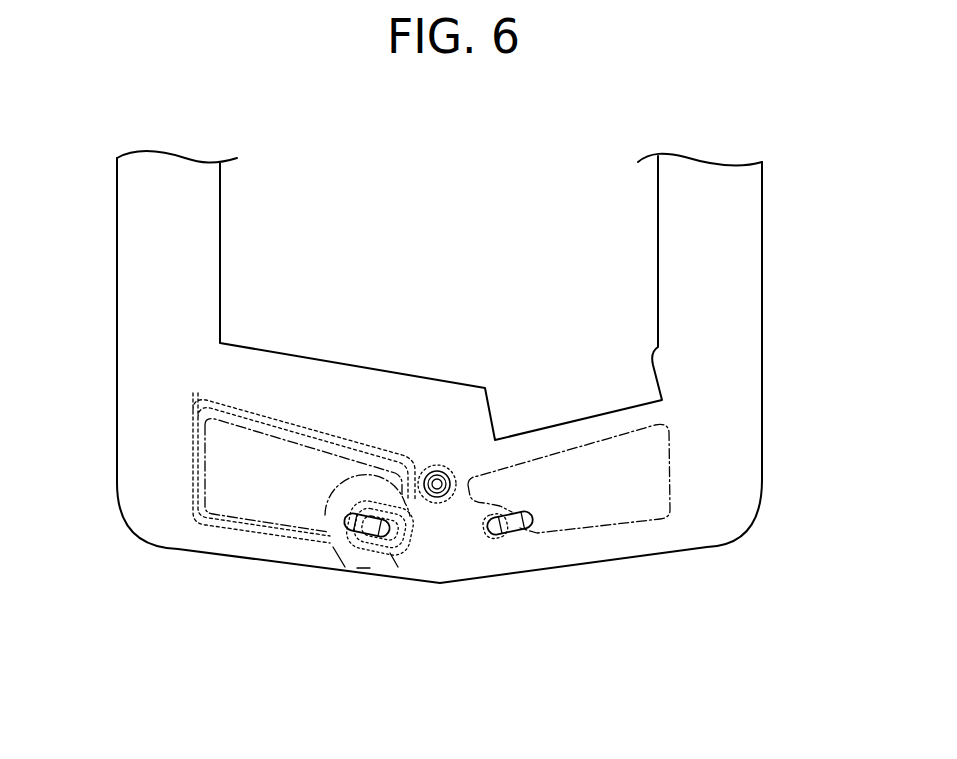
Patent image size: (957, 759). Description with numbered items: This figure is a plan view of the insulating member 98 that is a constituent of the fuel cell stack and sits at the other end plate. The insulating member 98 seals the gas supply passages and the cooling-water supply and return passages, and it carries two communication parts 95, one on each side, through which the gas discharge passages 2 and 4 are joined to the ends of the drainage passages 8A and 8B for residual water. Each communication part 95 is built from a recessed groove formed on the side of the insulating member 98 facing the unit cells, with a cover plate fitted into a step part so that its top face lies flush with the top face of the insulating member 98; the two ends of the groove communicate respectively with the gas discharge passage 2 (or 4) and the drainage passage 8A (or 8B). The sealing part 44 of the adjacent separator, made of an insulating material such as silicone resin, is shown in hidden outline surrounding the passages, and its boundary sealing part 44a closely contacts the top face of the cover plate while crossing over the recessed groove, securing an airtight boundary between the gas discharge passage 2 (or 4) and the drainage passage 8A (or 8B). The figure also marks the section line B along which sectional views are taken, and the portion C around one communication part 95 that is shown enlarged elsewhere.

The insulating member 98 is at (743, 325).
The gas discharge passage 4 is at (250, 532).
The gas discharge passage 2 is at (628, 520).
The boundary sealing part 44a is at (330, 553).
The sealing part 44 is at (393, 555).
The drainage passage 8B is at (392, 555).
The drainage passage 8A is at (485, 530).
The communication part 95 is at (370, 540).
The portion indicated by reference symbol C is at (415, 465).
The line B- B is at (143, 471).